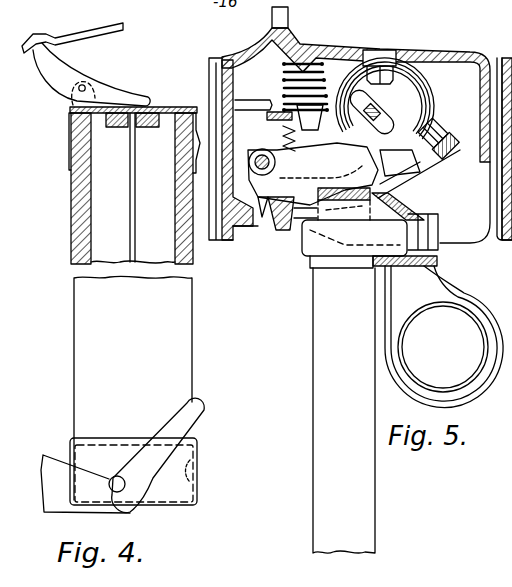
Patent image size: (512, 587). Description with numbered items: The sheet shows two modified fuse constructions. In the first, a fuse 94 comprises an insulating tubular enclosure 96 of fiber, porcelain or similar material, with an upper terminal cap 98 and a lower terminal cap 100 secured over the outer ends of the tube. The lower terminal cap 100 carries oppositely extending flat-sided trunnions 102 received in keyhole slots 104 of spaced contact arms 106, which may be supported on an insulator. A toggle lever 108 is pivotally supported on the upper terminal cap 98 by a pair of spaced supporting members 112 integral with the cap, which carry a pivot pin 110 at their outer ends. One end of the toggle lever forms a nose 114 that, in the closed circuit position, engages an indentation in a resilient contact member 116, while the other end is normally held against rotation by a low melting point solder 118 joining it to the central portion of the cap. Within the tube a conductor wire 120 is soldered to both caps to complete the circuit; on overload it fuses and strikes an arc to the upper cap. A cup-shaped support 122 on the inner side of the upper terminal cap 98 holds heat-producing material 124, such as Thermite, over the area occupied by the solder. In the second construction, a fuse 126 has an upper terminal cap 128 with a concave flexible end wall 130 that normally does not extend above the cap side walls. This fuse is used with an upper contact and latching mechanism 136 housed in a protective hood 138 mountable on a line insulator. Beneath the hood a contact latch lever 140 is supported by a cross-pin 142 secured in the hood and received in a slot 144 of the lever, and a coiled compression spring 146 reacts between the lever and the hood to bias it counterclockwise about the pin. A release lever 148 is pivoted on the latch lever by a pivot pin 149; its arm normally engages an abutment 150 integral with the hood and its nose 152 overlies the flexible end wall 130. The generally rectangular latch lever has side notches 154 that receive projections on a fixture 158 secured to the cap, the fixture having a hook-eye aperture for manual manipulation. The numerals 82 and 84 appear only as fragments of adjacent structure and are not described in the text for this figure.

In FIG. 5, the housing portion 82 is at (404, 0).
In FIG. 5, the housing portion 84 is at (479, 0).
In FIG. 4, the fuse 94 is at (80, 331).
In FIG. 4, the insulating tubular enclosure 96 is at (71, 200).
In FIG. 4, the upper terminal cap 98 is at (71, 137).
In FIG. 4, the lower terminal cap 100 is at (197, 477).
In FIG. 4, the trunnions 102 is at (115, 476).
In FIG. 4, the keyhole slots 104 is at (137, 508).
In FIG. 4, the contact arms 106 is at (193, 433).
In FIG. 4, the toggle lever 108 is at (65, 68).
In FIG. 4, the pivot pin 110 is at (88, 87).
In FIG. 4, the supporting members 112 is at (72, 103).
In FIG. 4, the nose 114 is at (42, 45).
In FIG. 4, the resilient contact member 116 is at (80, 35).
In FIG. 4, the low melting point solder 118 is at (150, 107).
In FIG. 4, the conductor wire 120 is at (136, 212).
In FIG. 4, the cup-shaped support 122 is at (149, 129).
In FIG. 4, the heat-producing material 124 is at (114, 129).
In FIG. 5, the fuse 126 is at (318, 408).
In FIG. 5, the upper terminal cap 128 is at (436, 213).
In FIG. 5, the flexible end wall 130 is at (302, 240).
In FIG. 5, the upper contact and latching mechanism 136 is at (360, 125).
In FIG. 5, the protective hood 138 is at (403, 53).
In FIG. 5, the contact latch lever 140 is at (412, 177).
In FIG. 5, the cross-pin 142 is at (382, 116).
In FIG. 5, the slot 144 is at (402, 128).
In FIG. 5, the coiled compression spring 146 is at (283, 93).
In FIG. 5, the release lever 148 is at (328, 162).
In FIG. 5, the pivot pin 149 is at (256, 148).
In FIG. 5, the abutment 150 is at (243, 228).
In FIG. 5, the nose 152 is at (390, 208).
In FIG. 5, the notches 154 is at (412, 179).
In FIG. 5, the fixture 158 is at (413, 290).